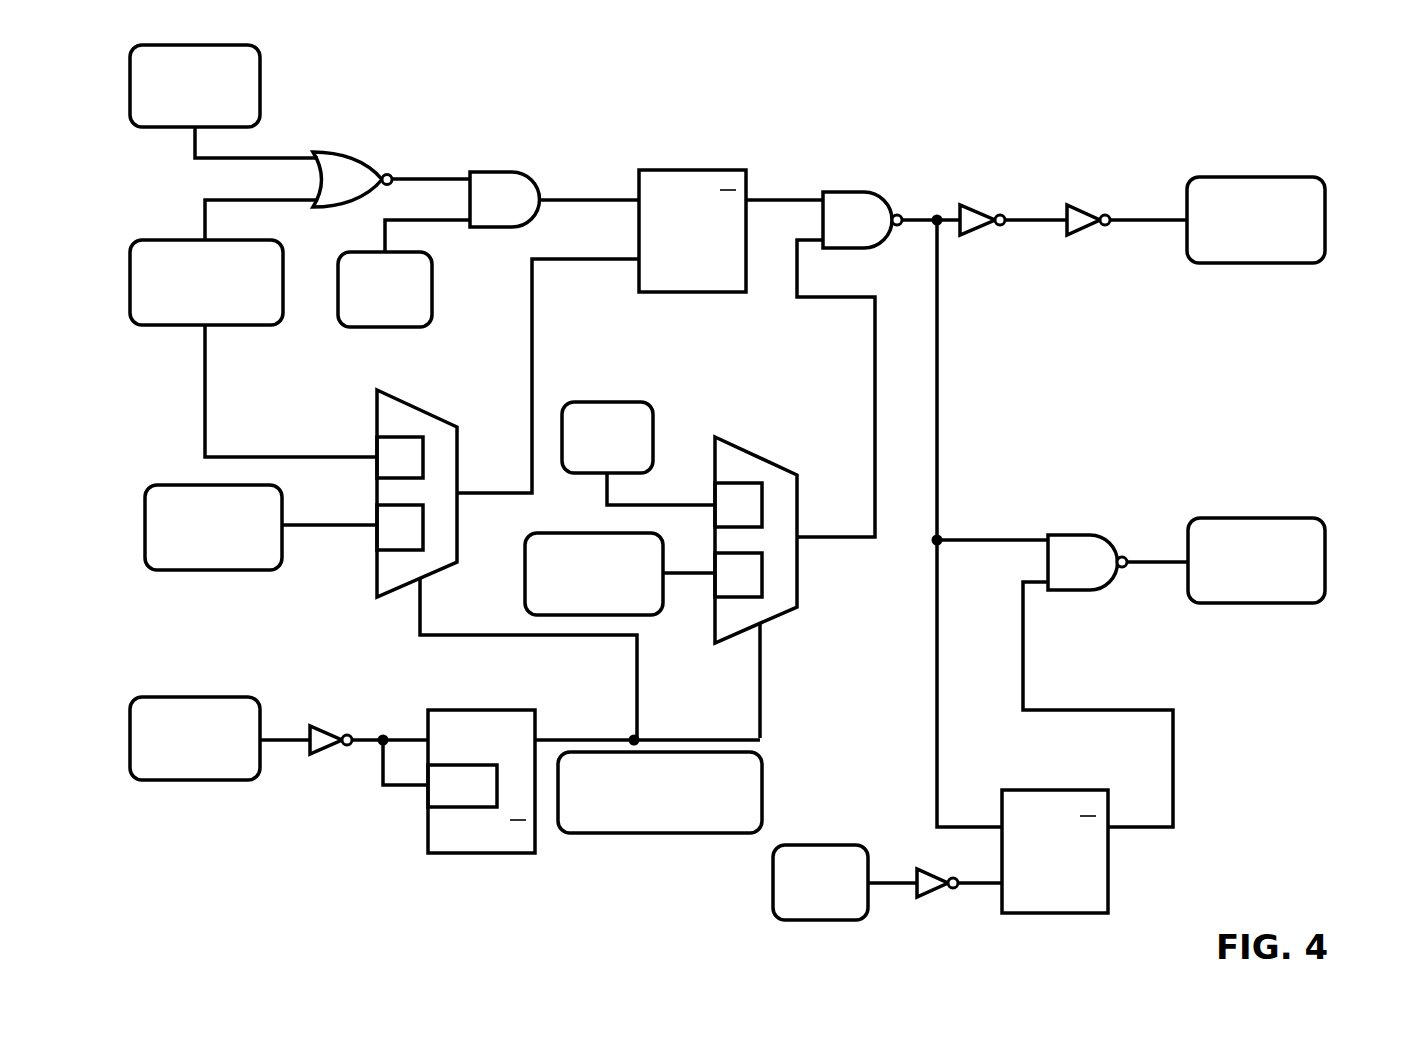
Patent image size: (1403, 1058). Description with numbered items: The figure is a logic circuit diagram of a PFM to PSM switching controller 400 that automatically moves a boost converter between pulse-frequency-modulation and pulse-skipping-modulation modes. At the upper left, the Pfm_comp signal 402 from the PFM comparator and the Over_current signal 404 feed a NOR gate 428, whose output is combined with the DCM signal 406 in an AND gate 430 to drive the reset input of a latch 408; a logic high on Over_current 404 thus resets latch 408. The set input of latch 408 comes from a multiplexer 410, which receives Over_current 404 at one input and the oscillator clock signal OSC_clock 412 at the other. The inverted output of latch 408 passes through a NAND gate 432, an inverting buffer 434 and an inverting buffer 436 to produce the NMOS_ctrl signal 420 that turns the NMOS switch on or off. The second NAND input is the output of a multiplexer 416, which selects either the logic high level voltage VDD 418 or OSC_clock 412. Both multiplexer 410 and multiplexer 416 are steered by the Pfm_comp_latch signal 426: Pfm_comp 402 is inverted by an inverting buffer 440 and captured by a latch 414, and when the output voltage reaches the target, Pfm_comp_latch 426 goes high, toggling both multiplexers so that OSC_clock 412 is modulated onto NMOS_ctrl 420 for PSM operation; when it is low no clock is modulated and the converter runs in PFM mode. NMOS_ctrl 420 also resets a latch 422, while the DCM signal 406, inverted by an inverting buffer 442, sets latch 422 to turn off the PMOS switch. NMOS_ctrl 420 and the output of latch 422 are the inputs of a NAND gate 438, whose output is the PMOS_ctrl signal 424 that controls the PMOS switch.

The PFM to PSM switching controller 400 is at (1245, 105).
The Pfm_comp signal 402 is at (177, 111).
The Over_current signal 404 is at (188, 309).
The DCM signal 406 is at (367, 314).
The latch 408 is at (660, 170).
The multiplexer 410 is at (433, 415).
The OSC_clock signal 412 is at (195, 553).
The latch 414 is at (452, 710).
The multiplexer 416 is at (772, 460).
The VDD 418 is at (589, 461).
The NMOS_ctrl signal 420 is at (1238, 251).
The latch 422 is at (1023, 790).
The PMOS_ctrl signal 424 is at (1239, 591).
The Pfm_comp_latch signal 426 is at (642, 821).
The NOR gate 428 is at (340, 152).
The AND gate 430 is at (500, 172).
The NAND gate 432 is at (838, 192).
The inverting buffer 434 is at (975, 205).
The inverting buffer 436 is at (1082, 205).
The NAND gate 438 is at (1066, 535).
The inverting buffer 440 is at (325, 727).
The inverting buffer 442 is at (925, 869).